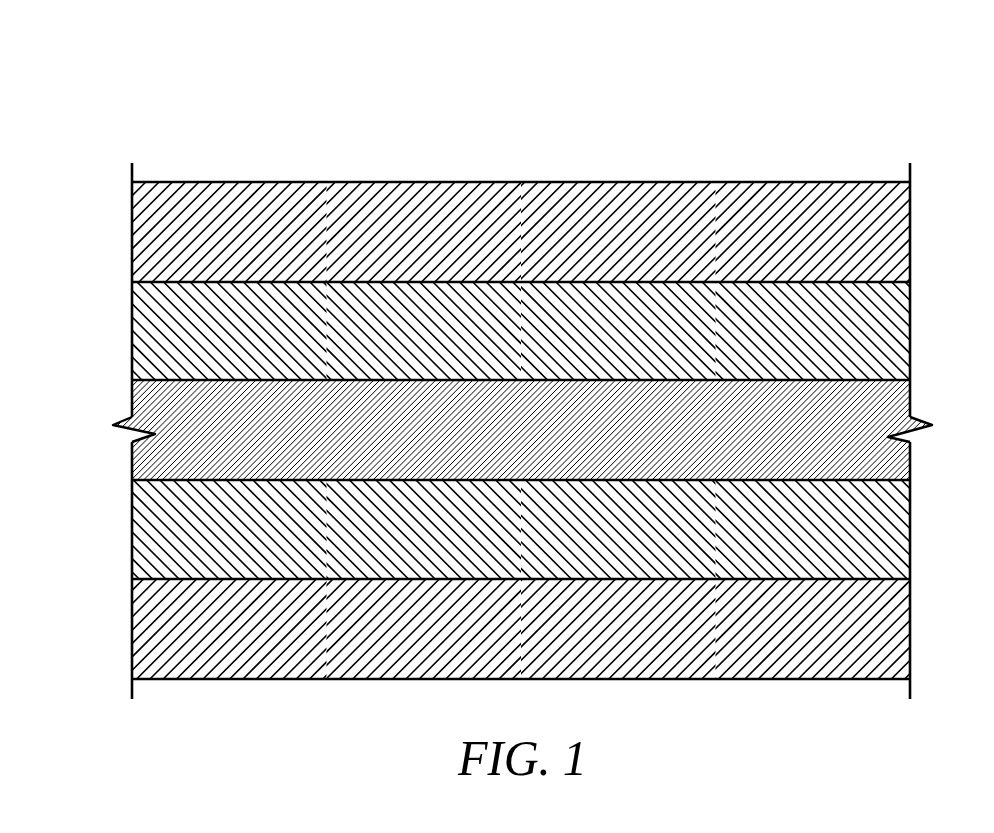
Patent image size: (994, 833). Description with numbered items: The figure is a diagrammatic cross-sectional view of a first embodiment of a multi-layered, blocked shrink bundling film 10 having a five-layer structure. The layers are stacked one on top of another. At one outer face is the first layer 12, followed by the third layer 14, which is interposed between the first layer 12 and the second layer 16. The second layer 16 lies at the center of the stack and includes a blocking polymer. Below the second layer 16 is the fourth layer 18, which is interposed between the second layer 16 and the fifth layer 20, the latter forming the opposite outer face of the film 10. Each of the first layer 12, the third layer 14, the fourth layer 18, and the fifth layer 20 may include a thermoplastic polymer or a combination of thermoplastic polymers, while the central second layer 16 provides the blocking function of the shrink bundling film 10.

The multi-layered blocked shrink bundling film 10 is at (134, 134).
The first layer 12 is at (141, 208).
The third layer 14 is at (141, 328).
The second layer 16 is at (116, 425).
The fourth layer 18 is at (141, 537).
The fifth layer 20 is at (141, 630).